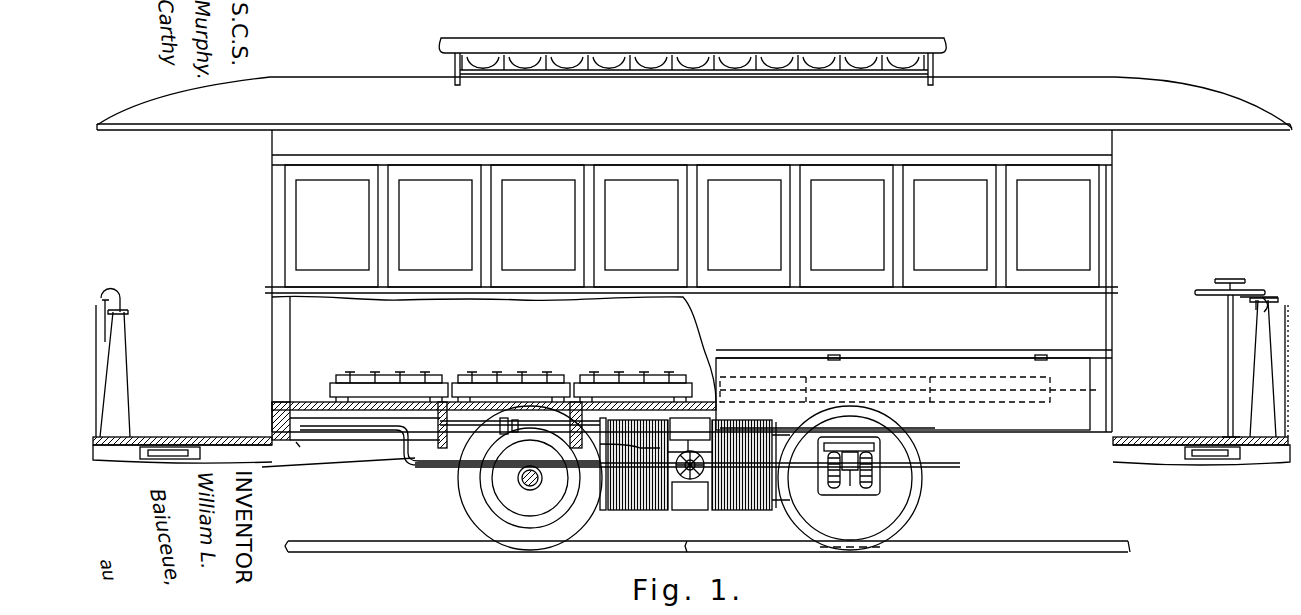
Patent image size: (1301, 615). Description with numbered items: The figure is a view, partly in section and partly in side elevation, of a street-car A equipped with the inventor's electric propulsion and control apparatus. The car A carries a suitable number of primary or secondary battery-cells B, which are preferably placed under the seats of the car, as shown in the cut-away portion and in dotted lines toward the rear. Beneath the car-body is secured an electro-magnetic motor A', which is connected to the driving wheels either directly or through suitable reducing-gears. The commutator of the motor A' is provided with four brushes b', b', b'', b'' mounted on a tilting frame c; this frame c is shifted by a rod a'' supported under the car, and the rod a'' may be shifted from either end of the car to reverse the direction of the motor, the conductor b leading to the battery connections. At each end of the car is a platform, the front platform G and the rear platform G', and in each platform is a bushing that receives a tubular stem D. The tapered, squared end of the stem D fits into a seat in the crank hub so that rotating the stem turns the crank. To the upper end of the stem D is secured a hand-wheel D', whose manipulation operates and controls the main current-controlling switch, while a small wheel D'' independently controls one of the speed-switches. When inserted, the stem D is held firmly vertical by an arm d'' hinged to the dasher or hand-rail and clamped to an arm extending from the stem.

The vehicle A is at (694, 252).
The electro-magnetic motor A' is at (690, 478).
The battery-cells B is at (715, 376).
The tilting frame c is at (690, 451).
The tubular stem D is at (1222, 366).
The hand-wheel D' is at (1218, 294).
The small wheel D'' is at (1242, 276).
The arm d'' is at (1257, 313).
The platform G is at (182, 376).
The rear platform G' is at (1201, 381).
The rod a'' is at (450, 454).
The conductor b is at (301, 451).
The brushes b' is at (694, 479).
The brushes b'' is at (632, 457).